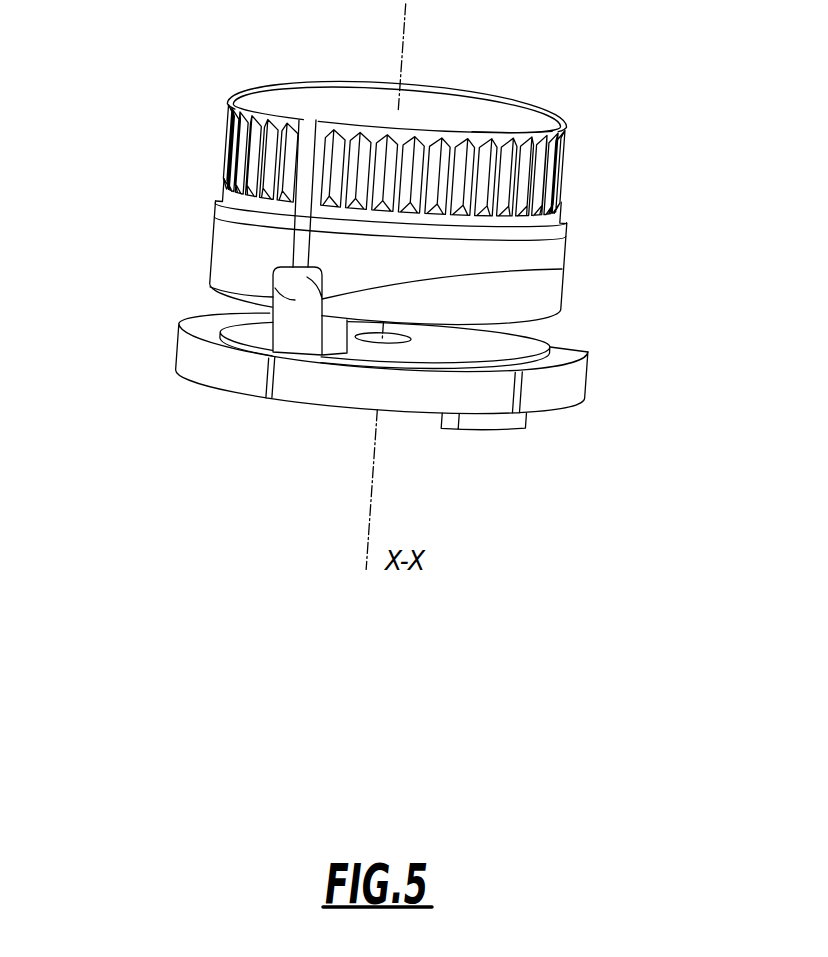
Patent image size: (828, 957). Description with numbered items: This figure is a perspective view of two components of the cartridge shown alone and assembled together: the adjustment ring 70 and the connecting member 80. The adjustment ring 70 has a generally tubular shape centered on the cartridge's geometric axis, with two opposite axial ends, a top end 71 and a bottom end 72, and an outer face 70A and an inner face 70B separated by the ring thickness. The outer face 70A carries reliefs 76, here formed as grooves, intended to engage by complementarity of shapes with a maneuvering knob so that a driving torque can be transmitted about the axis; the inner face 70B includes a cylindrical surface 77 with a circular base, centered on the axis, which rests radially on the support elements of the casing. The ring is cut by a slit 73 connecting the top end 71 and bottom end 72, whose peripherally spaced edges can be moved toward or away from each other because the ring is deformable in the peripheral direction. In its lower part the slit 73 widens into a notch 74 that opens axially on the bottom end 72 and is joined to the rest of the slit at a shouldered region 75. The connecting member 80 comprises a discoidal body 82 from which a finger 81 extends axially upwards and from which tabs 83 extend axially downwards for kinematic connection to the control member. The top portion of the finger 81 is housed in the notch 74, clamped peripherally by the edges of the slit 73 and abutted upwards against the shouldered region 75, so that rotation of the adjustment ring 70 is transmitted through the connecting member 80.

The adjustment ring 70 is at (402, 172).
The outer face 70A is at (576, 180).
The inner face 70B is at (515, 116).
The top end 71 is at (251, 91).
The bottom end 72 is at (553, 328).
The slit 73 is at (284, 248).
The notch 74 is at (271, 297).
The shouldered region 75 is at (566, 269).
The reliefs 76 is at (512, 175).
The cylindrical surface 77 is at (431, 107).
The connecting member 80 is at (331, 411).
The finger 81 is at (178, 322).
The discoidal body 82 is at (241, 373).
The tabs 83 is at (498, 424).